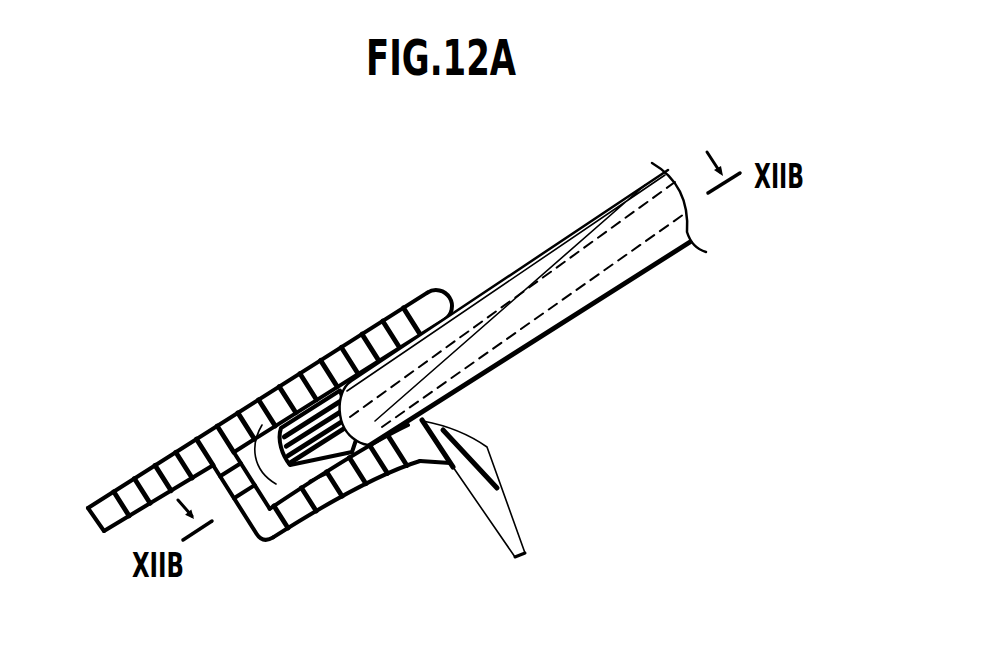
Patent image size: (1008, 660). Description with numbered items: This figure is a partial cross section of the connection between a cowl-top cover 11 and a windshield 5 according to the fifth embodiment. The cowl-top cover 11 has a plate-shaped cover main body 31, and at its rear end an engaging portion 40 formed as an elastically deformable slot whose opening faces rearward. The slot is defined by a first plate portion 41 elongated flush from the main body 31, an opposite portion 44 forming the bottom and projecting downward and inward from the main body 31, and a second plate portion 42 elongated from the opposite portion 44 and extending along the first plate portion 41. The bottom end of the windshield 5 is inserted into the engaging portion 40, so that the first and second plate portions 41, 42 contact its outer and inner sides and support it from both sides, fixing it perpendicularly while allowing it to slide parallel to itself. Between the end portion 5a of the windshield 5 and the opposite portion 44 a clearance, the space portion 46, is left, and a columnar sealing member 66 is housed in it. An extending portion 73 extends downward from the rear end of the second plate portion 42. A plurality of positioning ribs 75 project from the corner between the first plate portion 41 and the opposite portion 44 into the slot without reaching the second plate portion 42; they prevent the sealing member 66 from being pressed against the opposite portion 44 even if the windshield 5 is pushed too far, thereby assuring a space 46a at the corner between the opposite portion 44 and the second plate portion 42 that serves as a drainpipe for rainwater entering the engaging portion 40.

The windshield 5 is at (603, 222).
The end portion of the windshield 5a is at (314, 400).
The cowl-top cover 11 is at (250, 380).
The cover main body 31 is at (99, 500).
The engaging portion 40 is at (398, 308).
The first plate portion 41 is at (357, 337).
The second plate portion 42 is at (400, 470).
The opposite portion 44 is at (250, 505).
The space portion 46 is at (350, 541).
The space 46a is at (279, 488).
The sealing member 66 is at (319, 480).
The extending portion 73 is at (507, 506).
The positioning ribs 75 is at (262, 428).